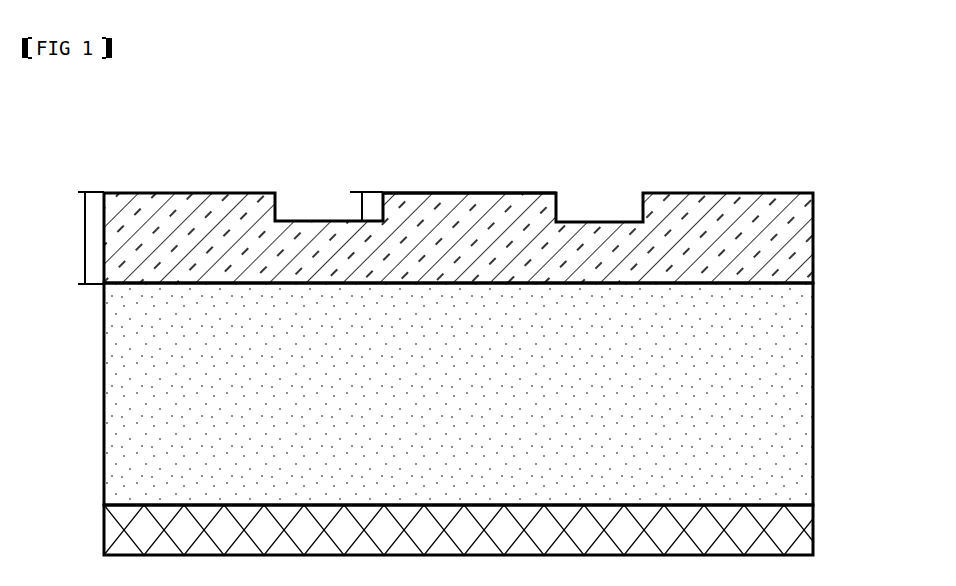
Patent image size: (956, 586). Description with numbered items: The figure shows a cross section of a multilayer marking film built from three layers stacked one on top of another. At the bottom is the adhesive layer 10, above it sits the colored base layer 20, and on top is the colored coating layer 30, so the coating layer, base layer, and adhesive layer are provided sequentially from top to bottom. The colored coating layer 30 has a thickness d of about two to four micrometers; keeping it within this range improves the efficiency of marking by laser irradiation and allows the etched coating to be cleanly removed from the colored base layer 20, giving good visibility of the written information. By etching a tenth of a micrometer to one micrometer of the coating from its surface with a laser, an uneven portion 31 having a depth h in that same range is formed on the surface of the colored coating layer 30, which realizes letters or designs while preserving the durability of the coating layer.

The adhesive layer 10 is at (811, 535).
The colored base layer 20 is at (811, 413).
The colored coating layer 30 is at (813, 247).
The uneven portion 31 is at (466, 193).
The thickness of the colored coating layer d is at (85, 230).
The thickness of the uneven portion h is at (360, 210).